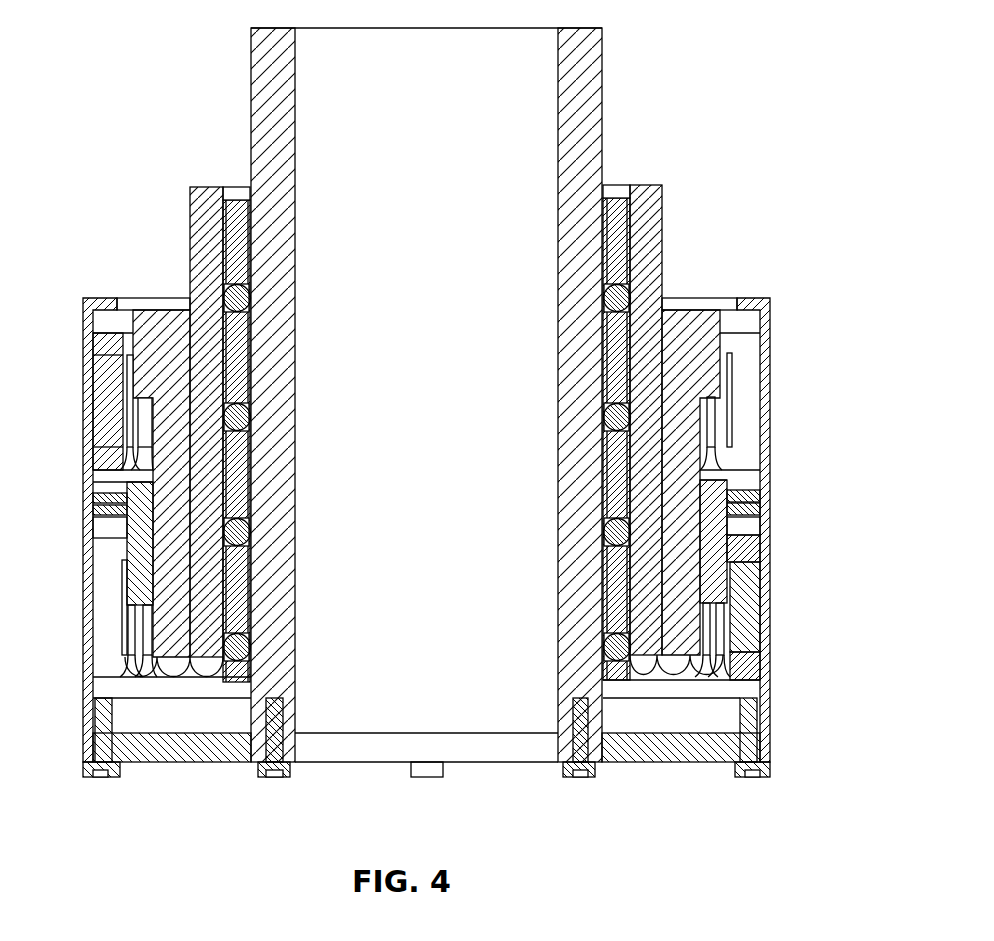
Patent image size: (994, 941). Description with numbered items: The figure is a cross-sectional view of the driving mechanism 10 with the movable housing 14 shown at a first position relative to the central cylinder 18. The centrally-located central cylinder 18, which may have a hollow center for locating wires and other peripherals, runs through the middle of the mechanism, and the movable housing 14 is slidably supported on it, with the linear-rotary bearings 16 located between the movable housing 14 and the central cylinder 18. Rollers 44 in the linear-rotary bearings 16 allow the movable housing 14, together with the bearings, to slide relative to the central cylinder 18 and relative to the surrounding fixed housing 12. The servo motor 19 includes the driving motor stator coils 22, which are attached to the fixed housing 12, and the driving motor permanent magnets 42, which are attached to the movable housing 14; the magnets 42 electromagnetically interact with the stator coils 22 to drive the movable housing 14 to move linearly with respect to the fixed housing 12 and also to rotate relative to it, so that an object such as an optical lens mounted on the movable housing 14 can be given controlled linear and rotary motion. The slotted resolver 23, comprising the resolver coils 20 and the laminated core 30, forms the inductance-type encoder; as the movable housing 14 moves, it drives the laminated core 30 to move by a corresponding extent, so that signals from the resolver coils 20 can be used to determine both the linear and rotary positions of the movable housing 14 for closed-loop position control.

The driving mechanism 10 is at (737, 115).
The fixed housing 12 is at (771, 298).
The movable housing 14 is at (207, 268).
The linear-rotary bearings 16 is at (622, 222).
The central cylinder 18 is at (592, 98).
The servo motor 19 is at (829, 608).
The resolver coils 20 is at (714, 456).
The driving motor stator coils 22 is at (723, 664).
The slotted resolver 23 is at (829, 373).
The laminated core 30 is at (152, 338).
The driving motor permanent magnets 42 is at (713, 537).
The rollers 44 is at (622, 297).